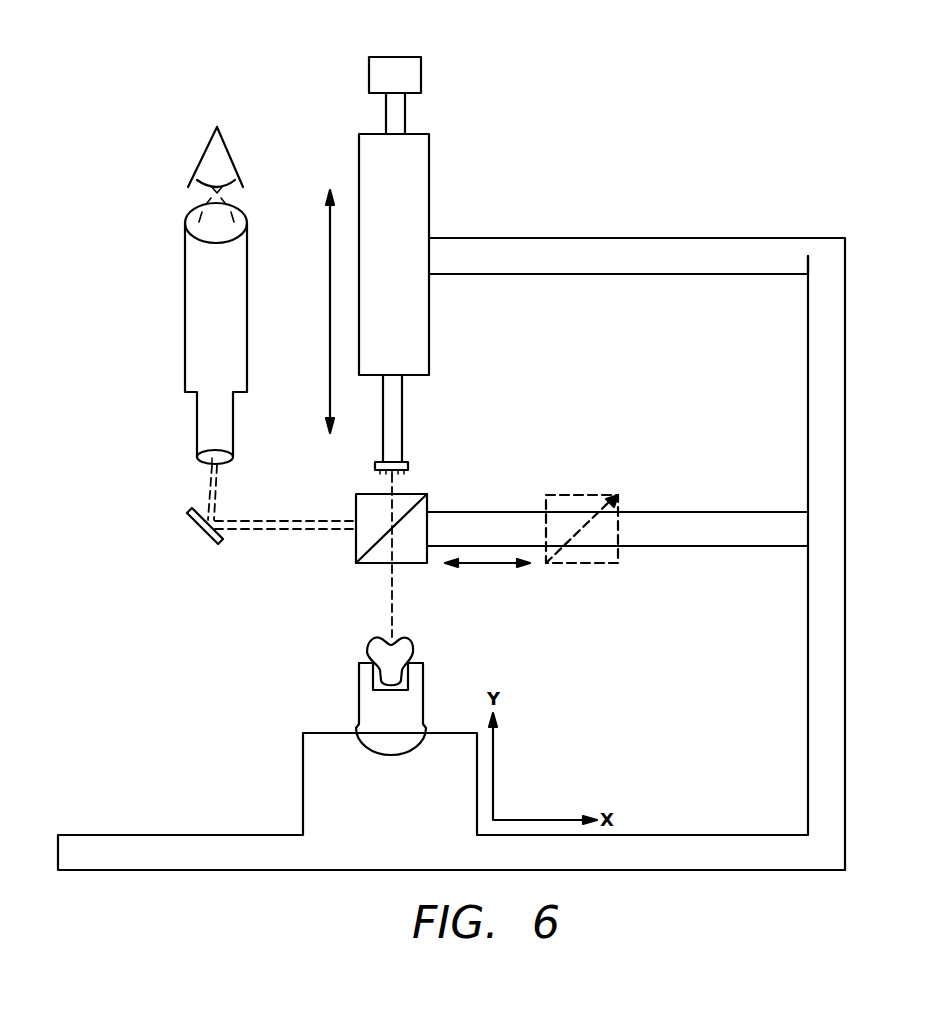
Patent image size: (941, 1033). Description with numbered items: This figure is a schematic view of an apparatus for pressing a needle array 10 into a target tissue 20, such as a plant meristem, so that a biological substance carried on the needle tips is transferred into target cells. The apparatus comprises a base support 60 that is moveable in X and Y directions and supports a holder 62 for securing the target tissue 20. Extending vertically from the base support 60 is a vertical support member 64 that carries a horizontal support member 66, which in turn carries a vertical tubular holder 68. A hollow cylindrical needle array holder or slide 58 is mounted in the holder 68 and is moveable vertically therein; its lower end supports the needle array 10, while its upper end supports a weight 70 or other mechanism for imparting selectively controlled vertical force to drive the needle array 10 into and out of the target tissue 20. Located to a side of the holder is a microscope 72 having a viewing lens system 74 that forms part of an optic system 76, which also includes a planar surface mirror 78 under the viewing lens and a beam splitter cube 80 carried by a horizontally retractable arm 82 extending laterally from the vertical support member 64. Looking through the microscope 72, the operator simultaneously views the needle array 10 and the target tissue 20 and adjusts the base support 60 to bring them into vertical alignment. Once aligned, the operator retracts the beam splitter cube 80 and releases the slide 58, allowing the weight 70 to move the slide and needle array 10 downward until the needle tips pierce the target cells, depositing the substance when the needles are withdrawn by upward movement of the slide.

The needle array 10 is at (408, 464).
The target tissue 20 is at (367, 650).
The needle array holder or slide 58 is at (405, 118).
The base support 60 is at (292, 797).
The holder 62 is at (406, 736).
The vertical support member 64 is at (845, 680).
The horizontal support member 66 is at (657, 238).
The vertical tubular holder 68 is at (429, 343).
The weight 70 is at (421, 63).
The microscope 72 is at (183, 355).
The viewing lens system 74 is at (215, 448).
The optic system 76 is at (196, 486).
The planar surface mirror 78 is at (200, 526).
The beam splitter cube 80 is at (423, 560).
The horizontally retractable arm 82 is at (692, 547).